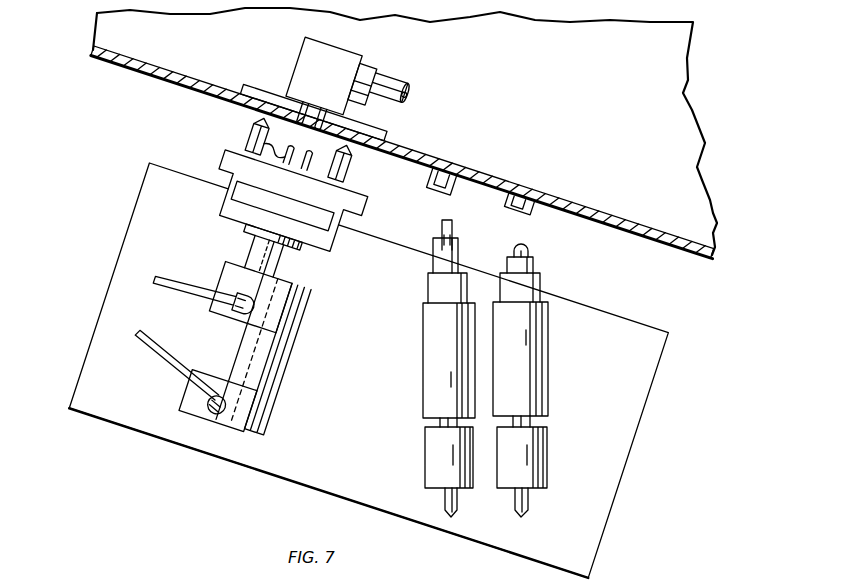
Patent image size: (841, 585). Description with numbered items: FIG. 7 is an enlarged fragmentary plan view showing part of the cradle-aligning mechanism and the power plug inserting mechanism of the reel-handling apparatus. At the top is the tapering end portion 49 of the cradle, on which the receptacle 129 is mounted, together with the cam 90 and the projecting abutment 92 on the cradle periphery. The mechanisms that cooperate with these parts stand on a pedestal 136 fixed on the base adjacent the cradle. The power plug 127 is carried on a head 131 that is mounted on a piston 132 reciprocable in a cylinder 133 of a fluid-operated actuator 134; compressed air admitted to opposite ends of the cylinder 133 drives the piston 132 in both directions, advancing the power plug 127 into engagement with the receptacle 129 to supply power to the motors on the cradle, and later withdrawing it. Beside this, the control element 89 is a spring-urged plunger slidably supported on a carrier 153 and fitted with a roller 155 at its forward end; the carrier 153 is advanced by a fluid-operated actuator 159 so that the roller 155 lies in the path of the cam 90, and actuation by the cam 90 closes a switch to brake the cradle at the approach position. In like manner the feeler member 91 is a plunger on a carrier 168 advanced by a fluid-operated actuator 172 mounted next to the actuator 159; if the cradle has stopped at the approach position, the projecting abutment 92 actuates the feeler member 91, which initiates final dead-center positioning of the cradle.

The tapering end portion 49 is at (163, 72).
The control element 89 is at (432, 246).
The cam 90 is at (434, 190).
The feeler member 91 is at (530, 251).
The projecting abutment 92 is at (537, 193).
The power plug 127 is at (258, 135).
The receptacle 129 is at (310, 62).
The head 131 is at (348, 199).
The piston 132 is at (277, 270).
The cylinder 133 is at (252, 368).
The fluid-operated actuator 134 is at (253, 434).
The pedestal 136 is at (132, 247).
The carrier 153 is at (421, 401).
The roller 155 is at (452, 233).
The fluid-operated actuator 159 is at (438, 457).
The carrier 168 is at (553, 373).
The fluid-operated actuator 172 is at (542, 460).